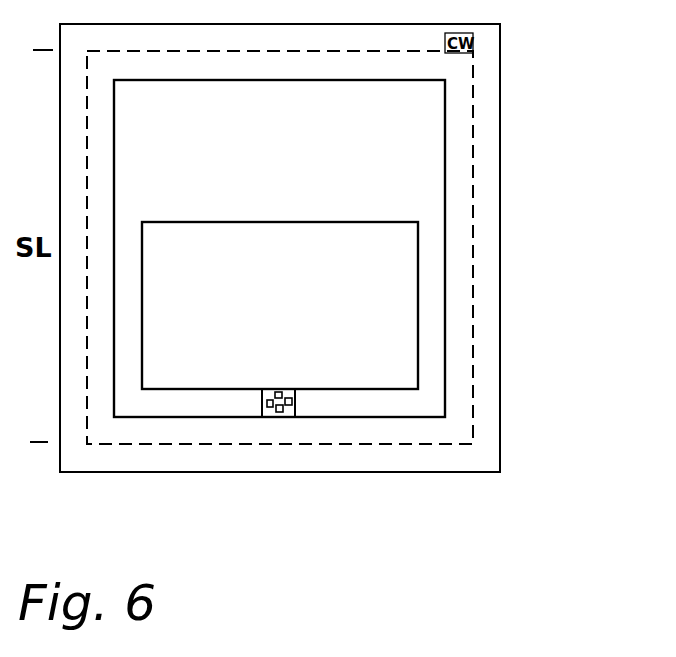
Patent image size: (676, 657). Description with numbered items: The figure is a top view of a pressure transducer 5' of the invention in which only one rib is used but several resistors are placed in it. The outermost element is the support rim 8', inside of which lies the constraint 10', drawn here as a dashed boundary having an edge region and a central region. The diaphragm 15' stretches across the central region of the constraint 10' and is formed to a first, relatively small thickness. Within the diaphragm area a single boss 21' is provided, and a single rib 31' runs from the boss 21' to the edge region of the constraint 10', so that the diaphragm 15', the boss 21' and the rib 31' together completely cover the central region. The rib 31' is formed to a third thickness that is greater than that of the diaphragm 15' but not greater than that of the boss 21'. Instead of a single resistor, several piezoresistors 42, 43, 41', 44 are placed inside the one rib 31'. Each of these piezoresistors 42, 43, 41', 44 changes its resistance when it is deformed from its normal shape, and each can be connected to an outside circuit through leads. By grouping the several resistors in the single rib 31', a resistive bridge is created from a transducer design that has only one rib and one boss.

The pressure transducer 5' is at (331, 248).
The constraint 10' is at (329, 247).
The support rim 8' is at (506, 247).
The diaphragm 15' is at (345, 248).
The boss 21' is at (280, 285).
The rib 31' is at (250, 387).
The piezoresistor 42 is at (278, 392).
The piezoresistor 43 is at (267, 404).
The piezoresistor 41' is at (320, 381).
The piezoresistor 44 is at (283, 409).